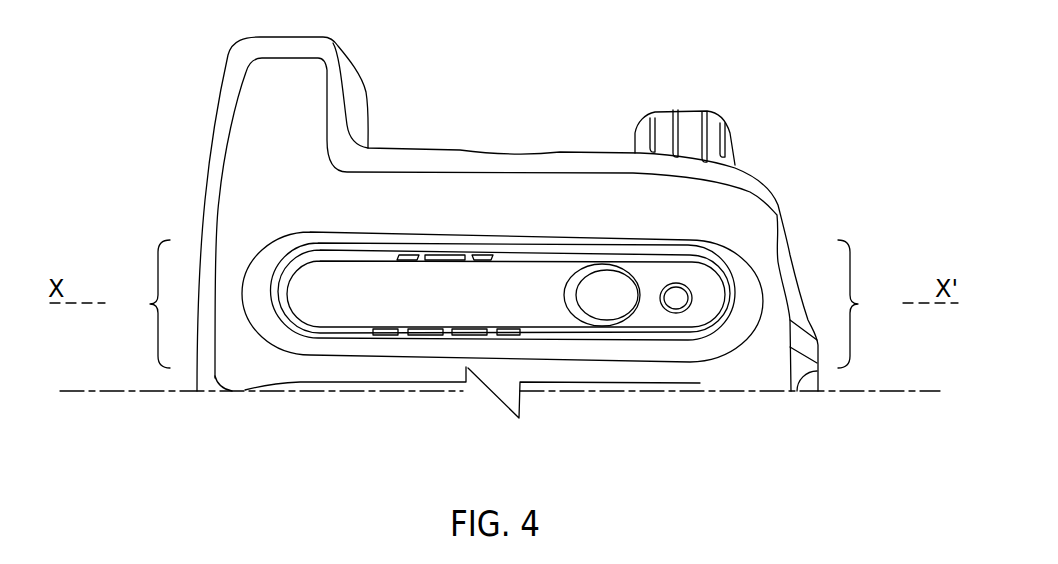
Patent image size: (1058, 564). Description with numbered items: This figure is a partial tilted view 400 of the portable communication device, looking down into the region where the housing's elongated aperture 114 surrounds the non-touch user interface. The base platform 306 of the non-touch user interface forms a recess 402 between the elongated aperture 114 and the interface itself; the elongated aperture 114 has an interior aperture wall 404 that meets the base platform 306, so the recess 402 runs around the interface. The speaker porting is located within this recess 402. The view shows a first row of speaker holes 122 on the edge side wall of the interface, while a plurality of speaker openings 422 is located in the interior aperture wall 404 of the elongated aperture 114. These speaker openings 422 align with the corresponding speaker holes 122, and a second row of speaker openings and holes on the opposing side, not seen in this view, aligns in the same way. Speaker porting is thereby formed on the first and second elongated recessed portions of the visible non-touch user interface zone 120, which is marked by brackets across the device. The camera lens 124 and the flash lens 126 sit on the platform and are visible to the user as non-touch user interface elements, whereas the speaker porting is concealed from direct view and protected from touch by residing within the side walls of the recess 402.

The partial tilted view 400 is at (162, 33).
The recess 402 is at (280, 297).
The elongated aperture 114 is at (357, 236).
The base platform 306 is at (720, 307).
The interior aperture wall 404 is at (723, 287).
The speaker openings 422 is at (456, 238).
The camera lens 124 is at (617, 275).
The flash lens 126 is at (676, 328).
The speaker holes 122 is at (430, 350).
The non-touch user interface zone 120 is at (502, 304).